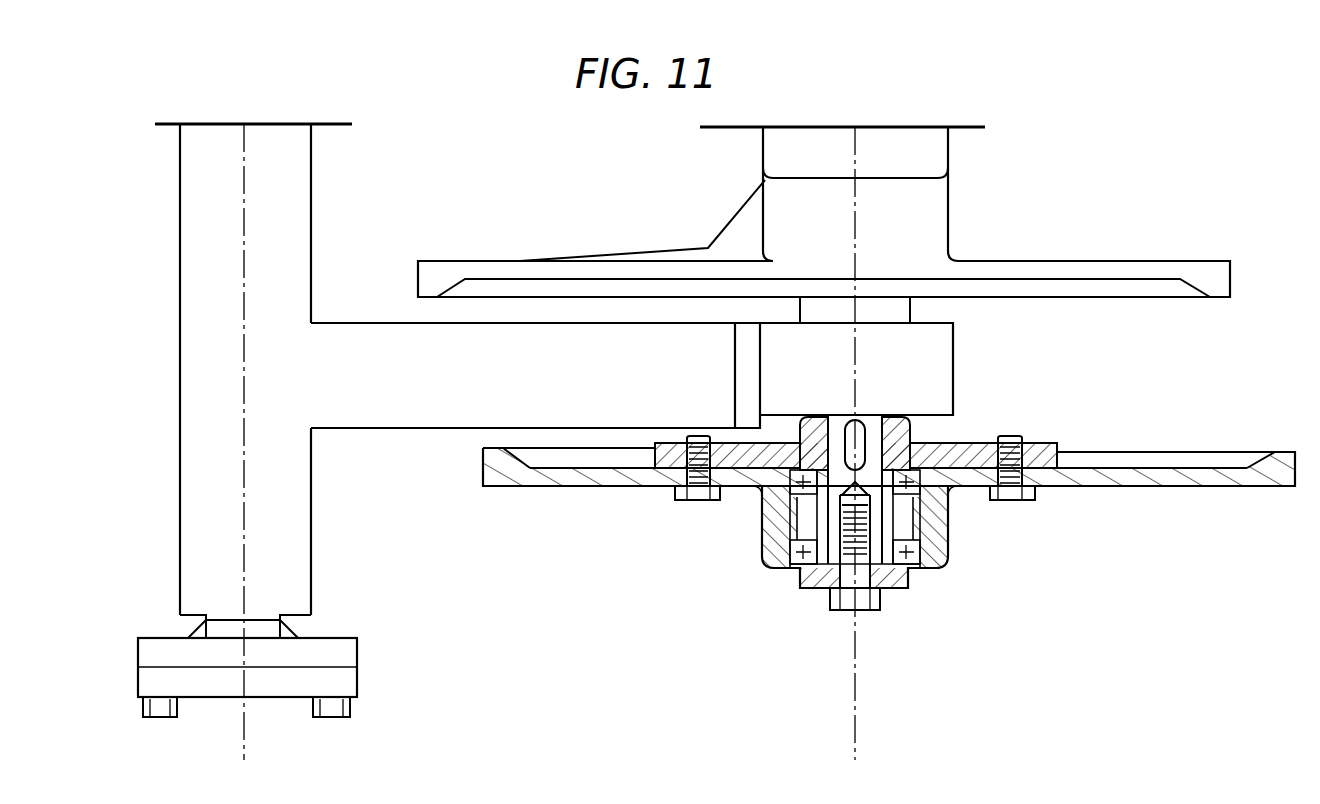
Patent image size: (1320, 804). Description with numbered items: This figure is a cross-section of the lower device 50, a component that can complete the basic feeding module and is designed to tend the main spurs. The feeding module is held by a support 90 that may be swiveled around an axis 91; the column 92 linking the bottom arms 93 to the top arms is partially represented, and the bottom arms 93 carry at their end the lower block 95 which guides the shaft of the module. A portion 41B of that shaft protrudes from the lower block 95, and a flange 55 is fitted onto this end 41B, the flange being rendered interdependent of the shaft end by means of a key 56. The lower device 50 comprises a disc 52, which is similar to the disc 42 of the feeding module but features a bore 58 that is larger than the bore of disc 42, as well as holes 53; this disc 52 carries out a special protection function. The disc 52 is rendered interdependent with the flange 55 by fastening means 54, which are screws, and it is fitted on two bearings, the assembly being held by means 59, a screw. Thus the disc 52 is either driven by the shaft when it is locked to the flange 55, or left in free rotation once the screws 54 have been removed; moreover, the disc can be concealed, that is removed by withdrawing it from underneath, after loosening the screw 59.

The support 90 is at (176, 337).
The axis 91 is at (245, 241).
The column 92 is at (181, 458).
The bottom arms 93 is at (427, 390).
The block 95 is at (930, 355).
The disc 42 is at (970, 262).
The key 56 is at (865, 438).
The flange 55 is at (660, 436).
The portion of the shaft 41B is at (865, 480).
The disc 52 is at (670, 474).
The holes 53 is at (1033, 474).
The fastening means 54 is at (1005, 500).
The lower device 50 is at (752, 572).
The bore 58 is at (905, 520).
The means 59 is at (843, 606).